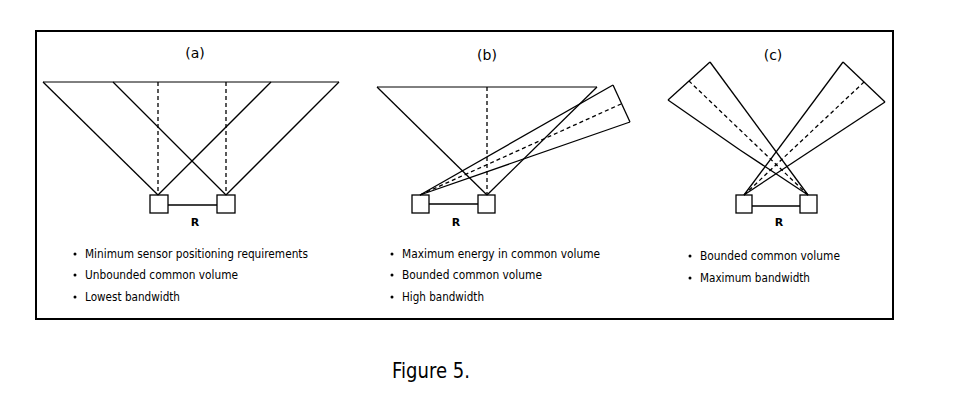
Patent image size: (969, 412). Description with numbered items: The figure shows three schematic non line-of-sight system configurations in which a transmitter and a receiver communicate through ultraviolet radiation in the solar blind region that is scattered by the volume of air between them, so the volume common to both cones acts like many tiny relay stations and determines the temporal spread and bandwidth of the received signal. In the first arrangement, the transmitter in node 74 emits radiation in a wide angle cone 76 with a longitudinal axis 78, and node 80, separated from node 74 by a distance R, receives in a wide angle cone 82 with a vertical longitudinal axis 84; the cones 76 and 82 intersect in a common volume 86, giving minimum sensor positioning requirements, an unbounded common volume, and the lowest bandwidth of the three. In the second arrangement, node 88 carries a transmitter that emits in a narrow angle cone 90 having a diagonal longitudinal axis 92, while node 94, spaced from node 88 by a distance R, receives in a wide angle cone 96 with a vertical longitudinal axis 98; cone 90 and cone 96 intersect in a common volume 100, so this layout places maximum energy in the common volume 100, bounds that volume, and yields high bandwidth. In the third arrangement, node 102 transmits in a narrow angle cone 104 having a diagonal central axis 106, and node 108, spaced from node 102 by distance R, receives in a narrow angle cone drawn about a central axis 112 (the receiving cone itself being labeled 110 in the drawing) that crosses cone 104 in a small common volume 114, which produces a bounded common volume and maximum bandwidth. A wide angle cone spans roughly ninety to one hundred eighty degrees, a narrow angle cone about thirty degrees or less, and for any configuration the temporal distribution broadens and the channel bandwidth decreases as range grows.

The node 74 is at (151, 201).
The wide angle cone 76 is at (92, 141).
The longitudinal axis 78 is at (158, 82).
The node 80 is at (235, 209).
The wide angle cone 82 is at (290, 127).
The vertical longitudinal axis 84 is at (224, 82).
The common volume 86 is at (187, 92).
The node 88 is at (412, 205).
The narrow angle cone 90 is at (592, 134).
The diagonal longitudinal axis 92 is at (532, 137).
The node 94 is at (495, 205).
The wide angle cone 96 is at (398, 116).
The vertical longitudinal axis 98 is at (488, 87).
The common volume 100 is at (523, 149).
The node 102 is at (736, 198).
The narrow angle cone 104 is at (814, 128).
The diagonal central axis 106 is at (861, 80).
The node 108 is at (818, 207).
The field of view of second sensor 110 is at (733, 99).
The central axis 112 is at (689, 87).
The common volume 114 is at (779, 165).